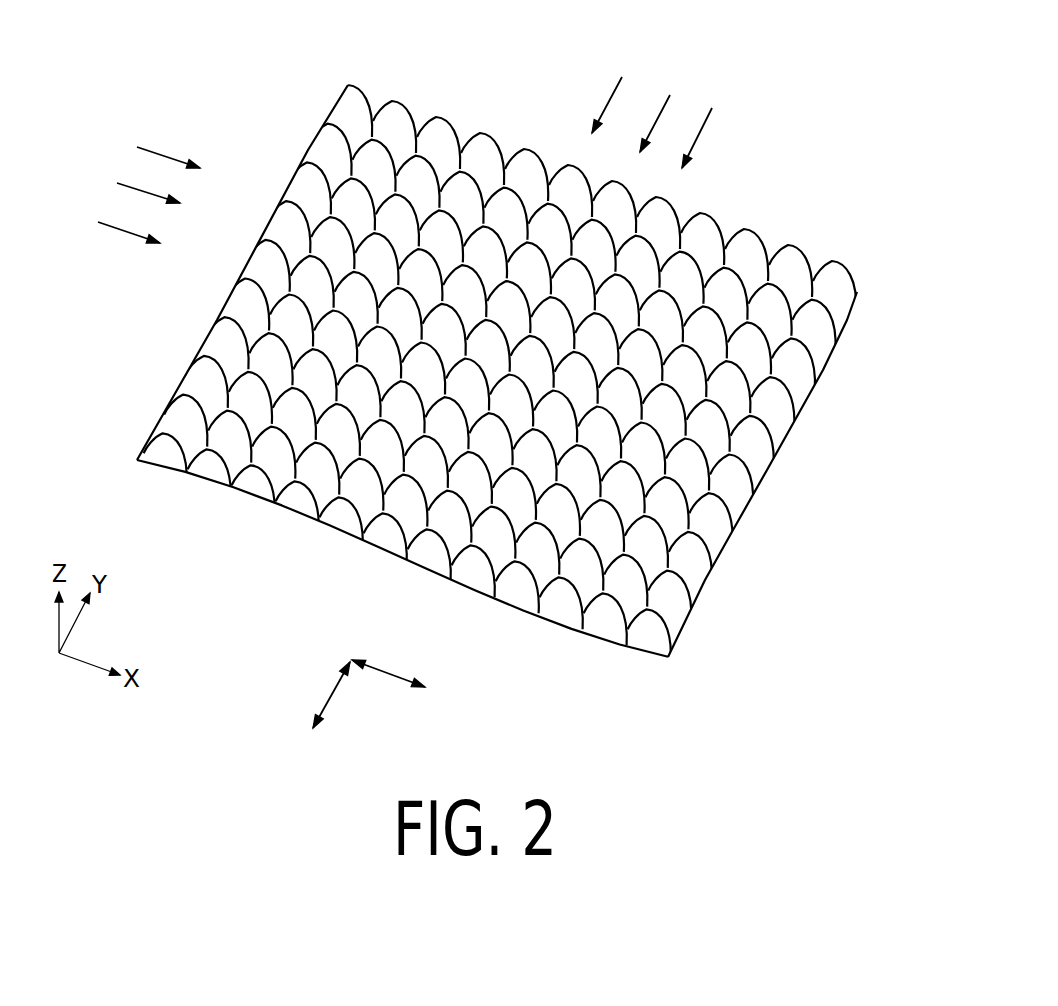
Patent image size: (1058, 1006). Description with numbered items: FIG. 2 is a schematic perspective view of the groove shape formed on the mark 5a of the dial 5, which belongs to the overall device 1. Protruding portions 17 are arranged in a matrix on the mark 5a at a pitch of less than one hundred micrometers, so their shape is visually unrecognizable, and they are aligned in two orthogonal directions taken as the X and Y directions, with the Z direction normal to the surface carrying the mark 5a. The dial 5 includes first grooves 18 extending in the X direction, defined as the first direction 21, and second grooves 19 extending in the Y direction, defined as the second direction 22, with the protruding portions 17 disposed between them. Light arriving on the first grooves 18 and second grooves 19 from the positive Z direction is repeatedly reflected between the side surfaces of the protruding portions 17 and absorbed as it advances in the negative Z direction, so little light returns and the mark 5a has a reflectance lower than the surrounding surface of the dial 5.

The optical element 1 is at (523, 360).
The dial 5 is at (523, 360).
The mark 5a is at (523, 360).
The protruding portions 17 is at (530, 148).
The first grooves 18 is at (158, 154).
The second grooves 19 is at (612, 95).
The first direction 21 is at (395, 674).
The second direction 22 is at (333, 692).